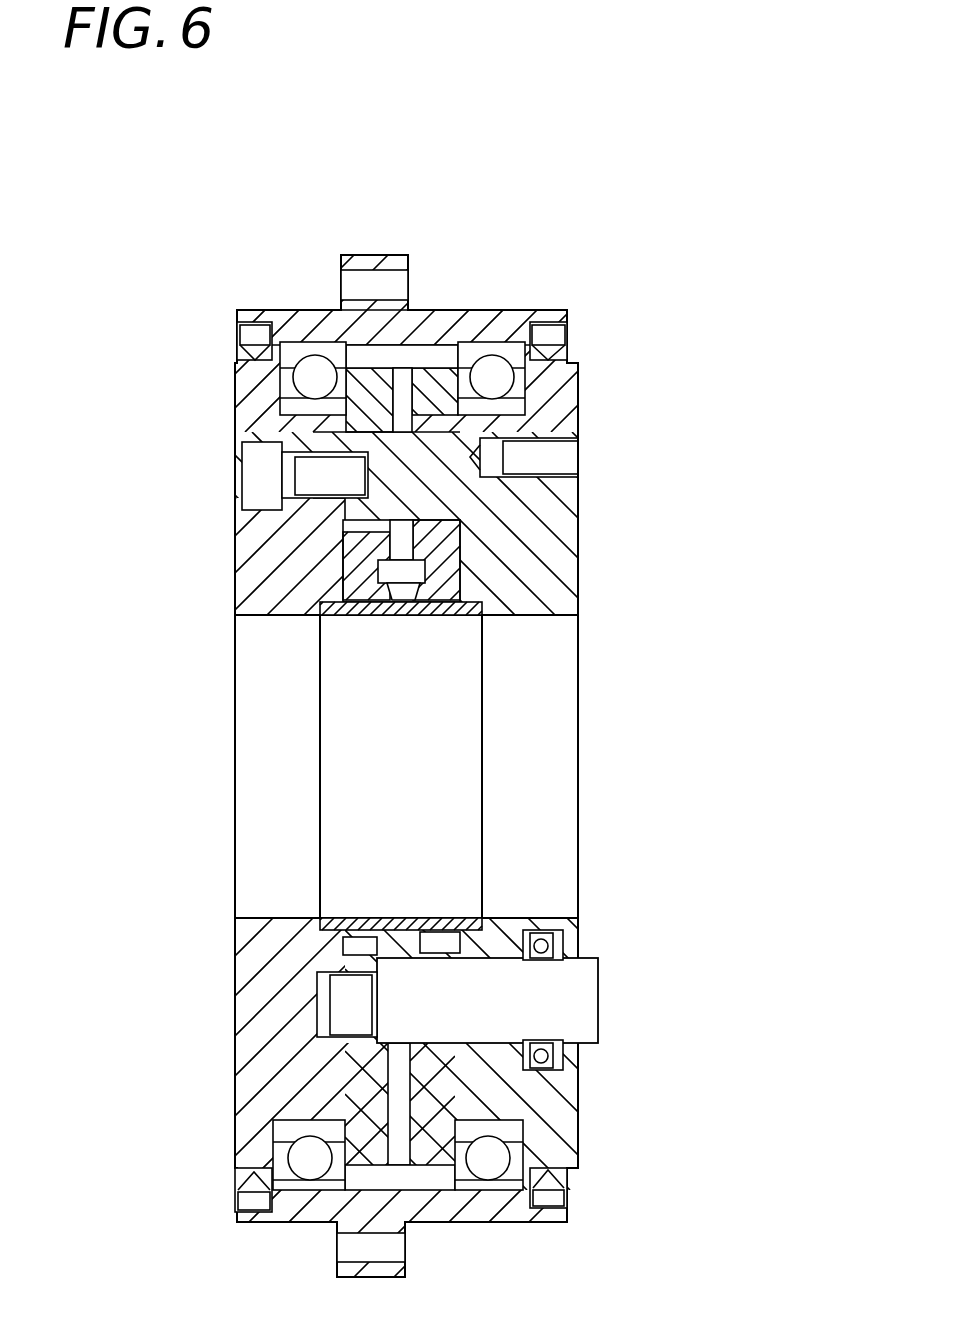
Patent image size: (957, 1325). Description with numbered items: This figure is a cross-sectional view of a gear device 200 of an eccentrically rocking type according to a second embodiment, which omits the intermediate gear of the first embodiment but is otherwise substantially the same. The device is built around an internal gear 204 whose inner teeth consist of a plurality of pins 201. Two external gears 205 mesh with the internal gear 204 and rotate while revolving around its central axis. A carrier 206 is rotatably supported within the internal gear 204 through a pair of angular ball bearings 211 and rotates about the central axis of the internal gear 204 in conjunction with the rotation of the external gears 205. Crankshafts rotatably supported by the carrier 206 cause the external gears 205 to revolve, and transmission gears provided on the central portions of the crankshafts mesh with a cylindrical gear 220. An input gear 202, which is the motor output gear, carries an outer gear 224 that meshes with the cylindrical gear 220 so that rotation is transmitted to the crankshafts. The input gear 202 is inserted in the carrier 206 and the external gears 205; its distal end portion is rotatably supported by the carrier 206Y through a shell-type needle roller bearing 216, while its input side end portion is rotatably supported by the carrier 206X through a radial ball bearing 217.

The gear device 200 is at (623, 162).
The pins 201 is at (432, 360).
The input gear 202 is at (592, 1025).
The internal gear 204 is at (491, 325).
The external gears 205 is at (375, 383).
The carrier 206 is at (578, 513).
The carrier 206X is at (553, 556).
The carrier 206Y is at (257, 600).
The angular ball bearings 211 is at (283, 413).
The shell-type needle roller bearing 216 is at (317, 1000).
The radial ball bearing 217 is at (540, 957).
The cylindrical gear 220 is at (402, 572).
The outer gear 224 is at (401, 1045).